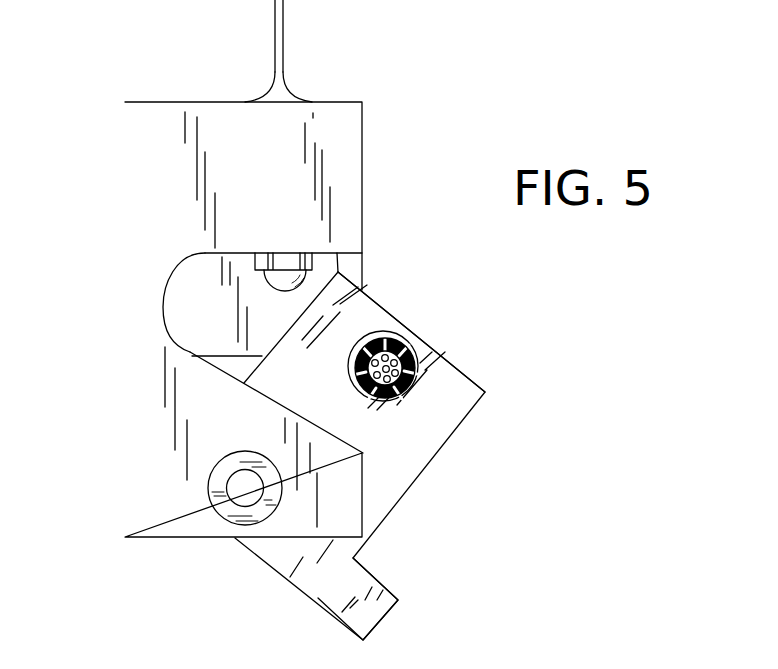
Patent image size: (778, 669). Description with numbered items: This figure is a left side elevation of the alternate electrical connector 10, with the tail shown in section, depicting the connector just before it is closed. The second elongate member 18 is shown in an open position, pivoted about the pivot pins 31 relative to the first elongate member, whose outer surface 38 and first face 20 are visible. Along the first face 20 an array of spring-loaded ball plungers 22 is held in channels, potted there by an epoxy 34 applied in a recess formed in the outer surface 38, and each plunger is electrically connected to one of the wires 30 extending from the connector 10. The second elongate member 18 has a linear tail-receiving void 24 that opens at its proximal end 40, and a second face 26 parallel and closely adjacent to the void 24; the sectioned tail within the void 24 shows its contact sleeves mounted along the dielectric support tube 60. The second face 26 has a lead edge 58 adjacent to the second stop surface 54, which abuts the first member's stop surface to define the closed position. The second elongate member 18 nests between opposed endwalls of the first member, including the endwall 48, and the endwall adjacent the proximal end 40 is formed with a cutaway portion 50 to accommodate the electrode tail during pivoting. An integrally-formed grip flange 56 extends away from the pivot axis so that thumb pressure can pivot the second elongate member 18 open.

The electrical connector 10 is at (99, 124).
The second elongate member 18 is at (418, 477).
The first face 20 is at (348, 255).
The spring-loaded ball plungers 22 is at (278, 288).
The tail-receiving void 24 is at (392, 332).
The second face 26 is at (474, 380).
The wires 30 is at (284, 28).
The pivot pins 31 is at (233, 500).
The epoxy 34 is at (272, 94).
The outer surface 38 is at (148, 102).
The proximal end 40 is at (435, 413).
The endwall 48 is at (200, 332).
The cutaway portion 50 is at (188, 292).
The second stop surface 54 is at (187, 352).
The grip flange 56 is at (380, 617).
The lead edge 58 is at (337, 253).
The dielectric support tube 60 is at (413, 352).